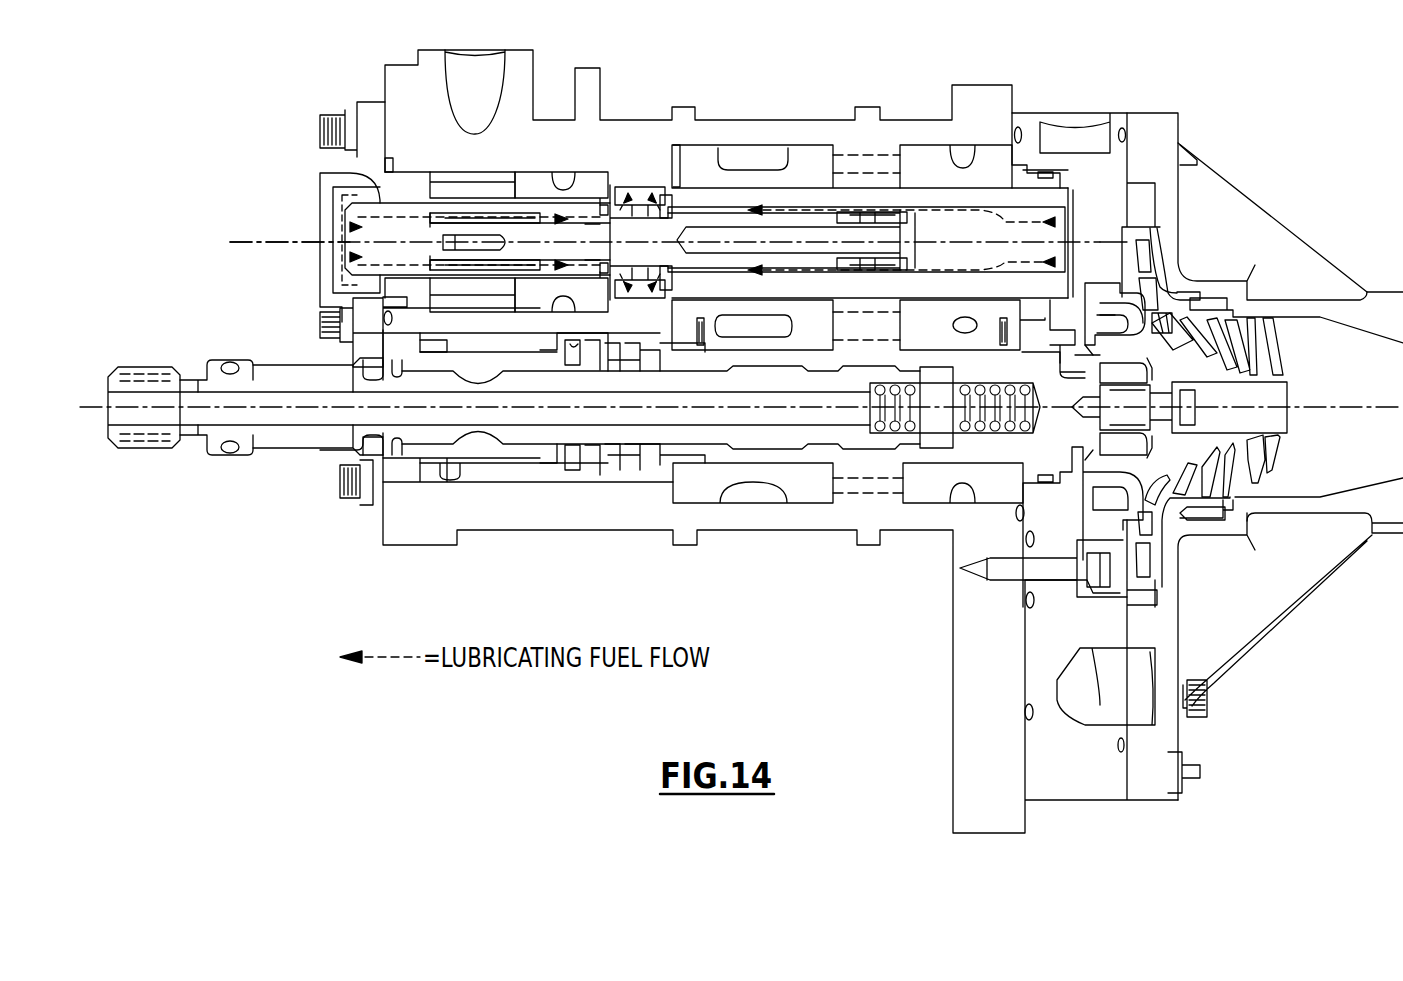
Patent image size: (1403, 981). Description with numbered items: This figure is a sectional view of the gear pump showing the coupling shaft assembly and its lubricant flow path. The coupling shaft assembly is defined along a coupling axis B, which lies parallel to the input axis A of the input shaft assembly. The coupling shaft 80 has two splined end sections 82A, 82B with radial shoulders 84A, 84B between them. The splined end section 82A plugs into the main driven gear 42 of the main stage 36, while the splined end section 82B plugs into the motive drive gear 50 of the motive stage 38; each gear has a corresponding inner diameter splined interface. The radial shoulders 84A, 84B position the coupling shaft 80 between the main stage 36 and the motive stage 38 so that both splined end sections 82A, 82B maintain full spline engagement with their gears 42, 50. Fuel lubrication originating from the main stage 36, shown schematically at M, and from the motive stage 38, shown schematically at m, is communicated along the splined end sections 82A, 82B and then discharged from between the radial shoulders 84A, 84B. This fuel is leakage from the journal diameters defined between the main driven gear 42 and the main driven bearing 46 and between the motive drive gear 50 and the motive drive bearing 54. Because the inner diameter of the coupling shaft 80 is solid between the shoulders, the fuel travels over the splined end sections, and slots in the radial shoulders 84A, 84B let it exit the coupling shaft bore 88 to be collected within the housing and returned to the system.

The motive stage 38 is at (403, 105).
The motive stage fuel lubrication origin m is at (352, 161).
The coupling axis B is at (243, 248).
The motive drive gear 50 is at (470, 190).
The motive drive bearing 54 is at (540, 190).
The coupling shaft 80 is at (672, 232).
The splined end section 82B is at (495, 217).
The radial shoulder 84B is at (613, 210).
The radial shoulder 84A is at (661, 207).
The main driven gear 42 is at (857, 180).
The splined end section 82A is at (861, 212).
The main driven bearing 46 is at (988, 155).
The main stage fuel lubrication origin M is at (1000, 185).
The coupling shaft bore 88 is at (585, 263).
The input axis A is at (90, 415).
The main stage 36 is at (868, 512).